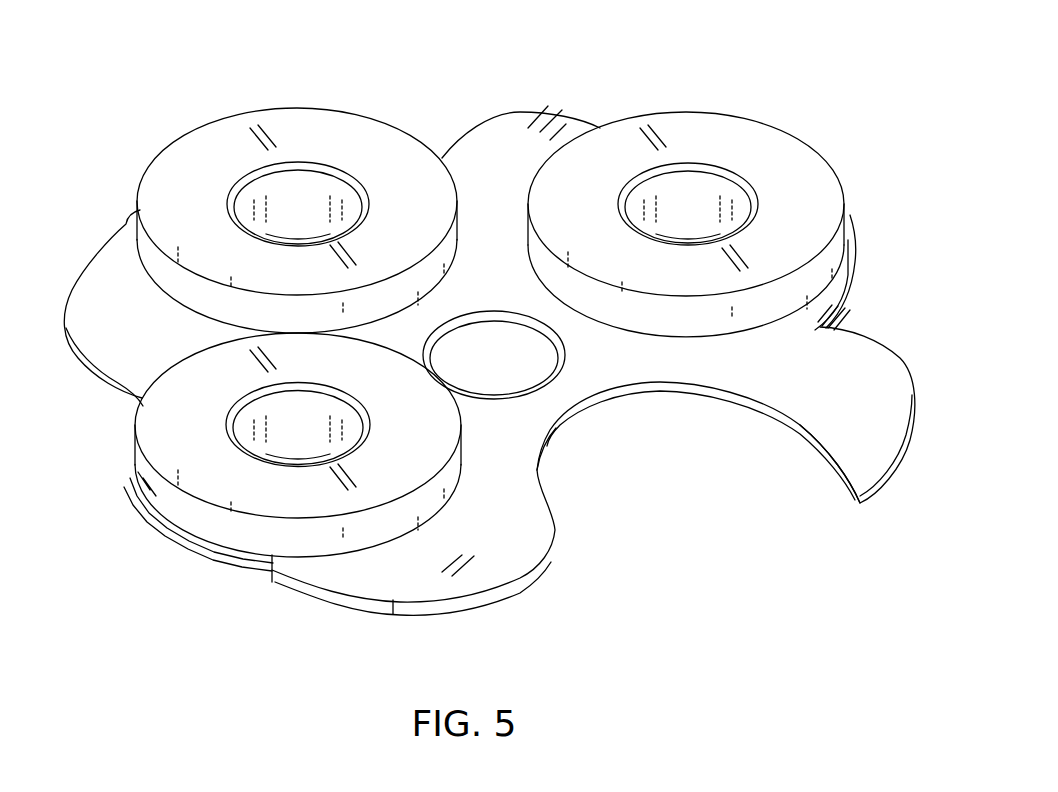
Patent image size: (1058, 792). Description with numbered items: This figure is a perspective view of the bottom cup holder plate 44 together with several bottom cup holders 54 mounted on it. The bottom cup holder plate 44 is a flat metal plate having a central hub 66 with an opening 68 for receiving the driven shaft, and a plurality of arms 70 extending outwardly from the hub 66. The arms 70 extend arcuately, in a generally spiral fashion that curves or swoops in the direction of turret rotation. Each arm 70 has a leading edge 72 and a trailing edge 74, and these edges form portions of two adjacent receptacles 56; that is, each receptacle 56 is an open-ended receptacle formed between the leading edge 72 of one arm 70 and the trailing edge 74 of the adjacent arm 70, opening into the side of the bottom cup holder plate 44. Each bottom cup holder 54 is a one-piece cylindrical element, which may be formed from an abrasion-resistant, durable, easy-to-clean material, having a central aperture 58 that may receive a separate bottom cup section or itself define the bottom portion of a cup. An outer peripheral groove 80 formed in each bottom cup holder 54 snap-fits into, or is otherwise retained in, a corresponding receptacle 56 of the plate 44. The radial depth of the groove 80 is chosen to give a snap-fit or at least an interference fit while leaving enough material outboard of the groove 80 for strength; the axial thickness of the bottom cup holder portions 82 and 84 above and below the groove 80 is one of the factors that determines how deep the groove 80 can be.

The bottom cup holder plate 44 is at (547, 108).
The bottom cup holder 54 is at (262, 108).
The receptacle 56 is at (652, 395).
The central aperture 58 is at (300, 196).
The central hub 66 is at (560, 390).
The opening 68 is at (462, 322).
The arm 70 is at (100, 316).
The leading edge 72 is at (88, 368).
The trailing edge 74 is at (795, 425).
The outer peripheral groove 80 is at (207, 553).
The bottom cup holder portion above the groove 82 is at (127, 223).
The bottom cup holder portion below the groove 84 is at (170, 548).